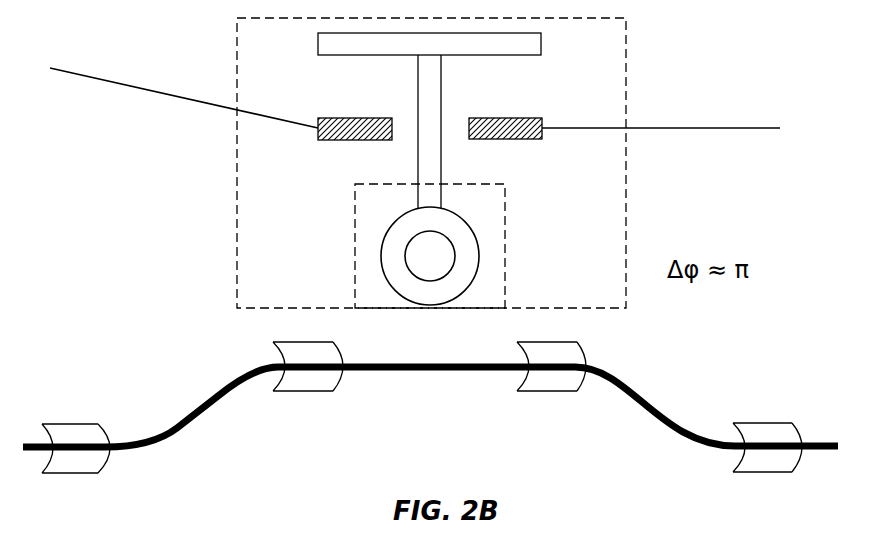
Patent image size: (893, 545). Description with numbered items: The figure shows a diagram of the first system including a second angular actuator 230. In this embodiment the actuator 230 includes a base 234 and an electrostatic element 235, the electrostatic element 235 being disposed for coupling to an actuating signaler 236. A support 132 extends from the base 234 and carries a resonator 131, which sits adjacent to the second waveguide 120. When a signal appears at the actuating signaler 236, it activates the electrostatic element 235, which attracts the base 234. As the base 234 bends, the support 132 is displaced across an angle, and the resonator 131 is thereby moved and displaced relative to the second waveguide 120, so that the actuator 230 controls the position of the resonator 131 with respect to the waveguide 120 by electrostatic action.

The second waveguide 120 is at (197, 423).
The resonator 131 is at (412, 223).
The support 132 is at (433, 112).
The second angular actuator 230 is at (299, 195).
The base 234 is at (541, 44).
The electrostatic element 235 is at (345, 118).
The actuating signaler 236 is at (140, 88).